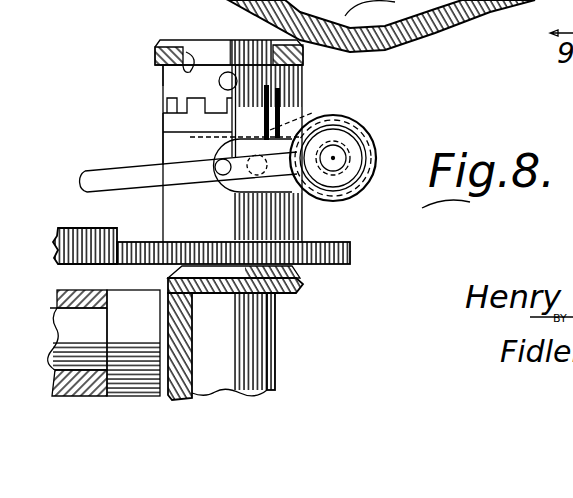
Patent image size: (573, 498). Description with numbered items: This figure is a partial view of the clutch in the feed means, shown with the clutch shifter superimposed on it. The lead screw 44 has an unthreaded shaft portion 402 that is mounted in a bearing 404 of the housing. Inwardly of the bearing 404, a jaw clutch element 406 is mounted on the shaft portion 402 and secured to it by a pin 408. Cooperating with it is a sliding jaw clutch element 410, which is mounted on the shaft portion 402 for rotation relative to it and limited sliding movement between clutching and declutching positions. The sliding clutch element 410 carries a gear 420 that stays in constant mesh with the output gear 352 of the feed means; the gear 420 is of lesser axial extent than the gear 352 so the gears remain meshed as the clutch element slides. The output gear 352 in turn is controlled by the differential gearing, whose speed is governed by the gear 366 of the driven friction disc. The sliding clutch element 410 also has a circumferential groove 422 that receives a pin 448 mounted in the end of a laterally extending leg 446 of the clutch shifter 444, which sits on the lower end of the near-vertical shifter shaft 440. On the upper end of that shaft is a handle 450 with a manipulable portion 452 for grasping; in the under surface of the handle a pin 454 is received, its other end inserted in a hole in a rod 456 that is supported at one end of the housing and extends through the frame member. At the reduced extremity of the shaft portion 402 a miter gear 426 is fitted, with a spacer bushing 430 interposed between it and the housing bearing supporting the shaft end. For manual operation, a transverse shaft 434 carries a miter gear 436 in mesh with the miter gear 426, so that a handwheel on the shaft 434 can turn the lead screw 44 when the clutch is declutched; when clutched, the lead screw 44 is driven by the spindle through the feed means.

The lead screw 44 is at (158, 50).
The ring gear 352 is at (93, 228).
The gear 366 is at (381, 26).
The unthreaded shaft portion 402 is at (195, 42).
The bearing 404 is at (163, 75).
The jaw clutch element 406 is at (303, 52).
The pin 408 is at (219, 78).
The sliding jaw clutch element 410 is at (307, 221).
The gear 420 is at (350, 248).
The circumferential groove 422 is at (163, 167).
The miter gear 426 is at (287, 290).
The spacer bushing 430 is at (257, 325).
The shaft 434 is at (50, 313).
The miter gear 436 is at (127, 307).
The shaft 440 is at (366, 131).
The clutch shifter 444 is at (366, 144).
The leg 446 is at (230, 239).
The pin 448 is at (228, 190).
The handle 450 is at (333, 115).
The manipulable portion 452 is at (97, 180).
The pin 454 is at (280, 230).
The rod 456 is at (253, 88).